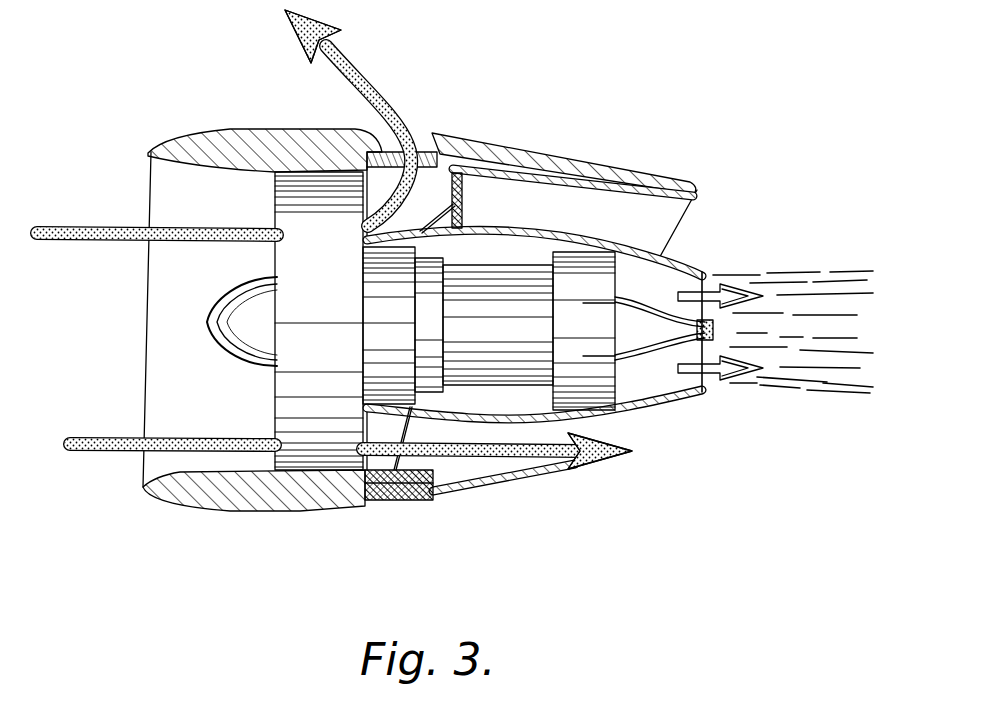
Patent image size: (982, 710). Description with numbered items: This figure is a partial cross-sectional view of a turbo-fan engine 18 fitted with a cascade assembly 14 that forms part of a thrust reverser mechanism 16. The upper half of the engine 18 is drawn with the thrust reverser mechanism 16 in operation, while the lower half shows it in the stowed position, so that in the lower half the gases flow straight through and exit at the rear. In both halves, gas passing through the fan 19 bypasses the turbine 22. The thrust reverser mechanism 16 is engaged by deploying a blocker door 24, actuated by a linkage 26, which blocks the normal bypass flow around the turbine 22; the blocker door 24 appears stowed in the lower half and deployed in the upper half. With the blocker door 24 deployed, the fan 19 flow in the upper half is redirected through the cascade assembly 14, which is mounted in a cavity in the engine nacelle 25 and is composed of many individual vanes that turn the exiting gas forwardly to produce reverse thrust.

The cascade assembly 14 is at (420, 152).
The thrust reverser mechanism 16 is at (400, 74).
The turbo-fan engine 18 is at (133, 112).
The fan 19 is at (315, 447).
The turbine 22 is at (537, 250).
The blocker door 24 is at (466, 207).
The engine nacelle 25 is at (212, 128).
The linkage 26 is at (432, 227).